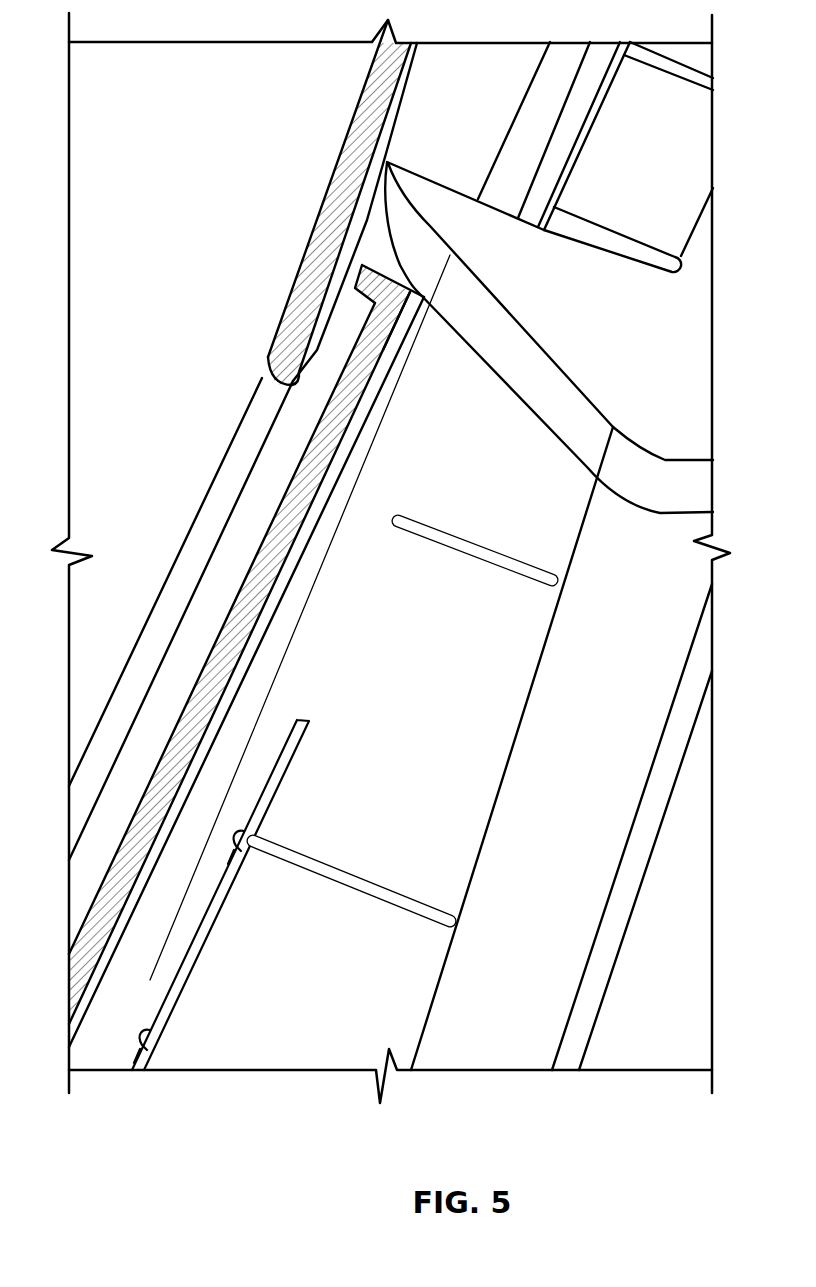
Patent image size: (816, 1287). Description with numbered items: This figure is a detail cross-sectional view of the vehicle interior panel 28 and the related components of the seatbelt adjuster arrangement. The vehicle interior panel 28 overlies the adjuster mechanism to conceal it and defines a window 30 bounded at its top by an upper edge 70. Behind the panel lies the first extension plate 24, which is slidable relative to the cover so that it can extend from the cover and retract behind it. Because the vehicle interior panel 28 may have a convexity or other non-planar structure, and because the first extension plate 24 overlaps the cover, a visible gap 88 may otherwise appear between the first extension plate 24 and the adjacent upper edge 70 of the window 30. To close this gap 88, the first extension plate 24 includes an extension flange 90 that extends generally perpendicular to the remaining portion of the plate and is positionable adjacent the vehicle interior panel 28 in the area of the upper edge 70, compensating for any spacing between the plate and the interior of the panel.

The first extension plate 24 is at (263, 566).
The vehicle interior panel 28 is at (353, 173).
The window 30 is at (251, 437).
The upper edge 70 is at (270, 378).
The visible gap 88 is at (366, 312).
The extension flange 90 is at (387, 275).